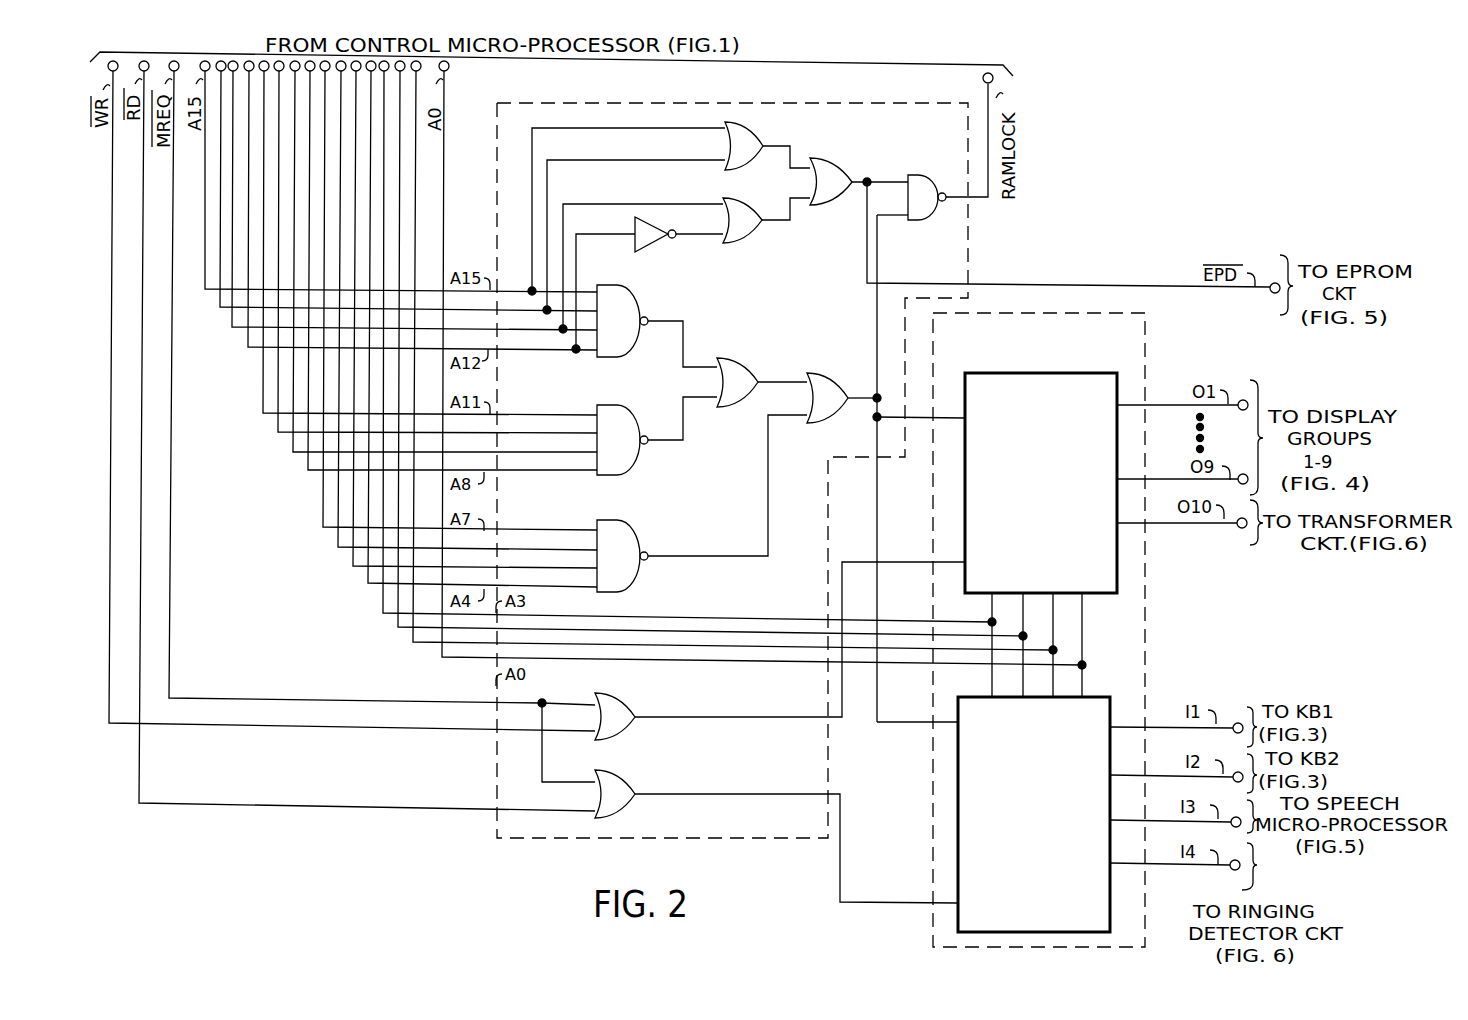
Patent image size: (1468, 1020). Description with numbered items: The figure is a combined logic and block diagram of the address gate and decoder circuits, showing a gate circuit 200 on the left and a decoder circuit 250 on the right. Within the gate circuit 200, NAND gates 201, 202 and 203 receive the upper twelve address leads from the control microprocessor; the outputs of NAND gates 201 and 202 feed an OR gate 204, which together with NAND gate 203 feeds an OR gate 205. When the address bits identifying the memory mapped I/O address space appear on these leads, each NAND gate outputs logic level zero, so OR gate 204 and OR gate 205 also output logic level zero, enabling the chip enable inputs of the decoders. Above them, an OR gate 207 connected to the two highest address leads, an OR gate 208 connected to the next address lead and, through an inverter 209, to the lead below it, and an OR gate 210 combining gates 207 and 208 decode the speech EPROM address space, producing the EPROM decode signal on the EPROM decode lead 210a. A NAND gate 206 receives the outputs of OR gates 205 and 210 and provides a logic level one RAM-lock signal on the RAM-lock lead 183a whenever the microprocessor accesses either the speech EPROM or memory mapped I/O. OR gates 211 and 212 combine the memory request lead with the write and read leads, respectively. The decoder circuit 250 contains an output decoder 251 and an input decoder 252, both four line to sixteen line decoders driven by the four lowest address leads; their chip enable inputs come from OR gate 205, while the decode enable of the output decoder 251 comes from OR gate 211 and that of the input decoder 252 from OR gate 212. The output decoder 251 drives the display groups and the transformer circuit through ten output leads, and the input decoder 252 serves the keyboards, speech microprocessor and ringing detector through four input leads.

The gate circuit 200 is at (796, 836).
The NAND gate 201 is at (622, 286).
The NAND gate 202 is at (622, 406).
The NAND gate 203 is at (620, 521).
The OR gate 204 is at (728, 360).
The OR gate 205 is at (816, 375).
The NAND gate 206 is at (911, 186).
The OR gate 207 is at (748, 122).
The OR gate 208 is at (732, 199).
The inverter 209 is at (648, 246).
The OR gate 210 is at (830, 160).
The EPROM decode lead 210a is at (940, 288).
The RAM-lock lead 183a is at (955, 208).
The OR gate 211 is at (626, 694).
The OR gate 212 is at (626, 772).
The decoder circuit 250 is at (1050, 363).
The output decoder 251 is at (1048, 545).
The input decoder 252 is at (1055, 850).